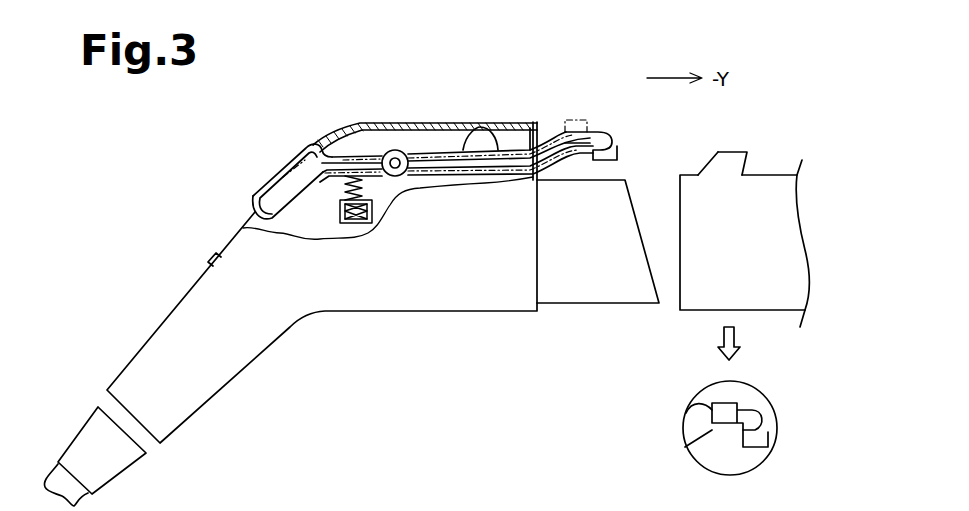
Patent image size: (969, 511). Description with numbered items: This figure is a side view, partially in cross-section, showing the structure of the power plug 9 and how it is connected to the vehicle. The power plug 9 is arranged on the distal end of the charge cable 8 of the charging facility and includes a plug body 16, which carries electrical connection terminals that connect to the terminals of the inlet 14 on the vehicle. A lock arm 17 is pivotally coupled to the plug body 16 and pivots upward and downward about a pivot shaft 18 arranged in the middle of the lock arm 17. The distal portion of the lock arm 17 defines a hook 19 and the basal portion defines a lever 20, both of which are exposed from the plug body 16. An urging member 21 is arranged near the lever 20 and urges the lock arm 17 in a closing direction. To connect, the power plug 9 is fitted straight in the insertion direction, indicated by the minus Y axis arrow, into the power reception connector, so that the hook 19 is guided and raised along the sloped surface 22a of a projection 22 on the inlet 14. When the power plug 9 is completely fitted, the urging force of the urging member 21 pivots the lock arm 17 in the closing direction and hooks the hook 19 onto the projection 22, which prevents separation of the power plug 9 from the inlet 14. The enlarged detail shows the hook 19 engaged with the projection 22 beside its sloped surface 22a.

The charge cable 8 is at (54, 472).
The power plug 9 is at (470, 335).
The inlet 14 is at (693, 311).
The plug body 16 is at (372, 313).
The lock arm 17 is at (495, 142).
The pivot shaft 18 is at (395, 158).
The hook 19 is at (618, 150).
The lever 20 is at (274, 177).
The urging member 21 is at (383, 203).
The projection 22 is at (738, 160).
The sloped surface 22a is at (708, 163).